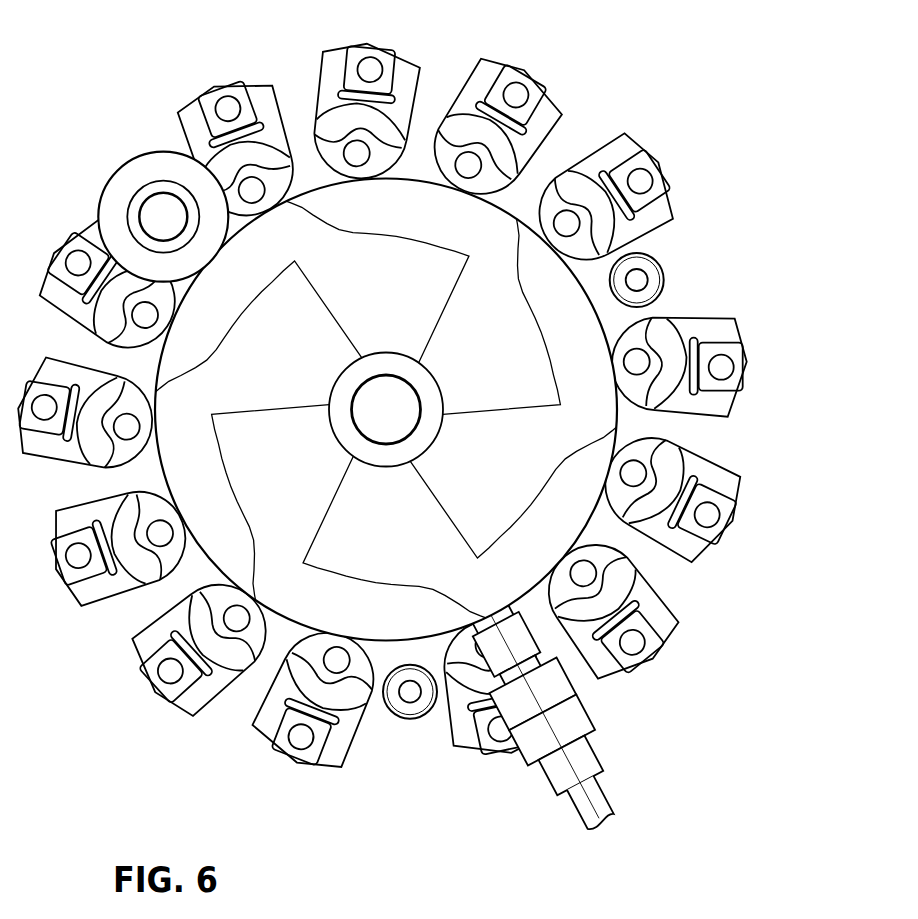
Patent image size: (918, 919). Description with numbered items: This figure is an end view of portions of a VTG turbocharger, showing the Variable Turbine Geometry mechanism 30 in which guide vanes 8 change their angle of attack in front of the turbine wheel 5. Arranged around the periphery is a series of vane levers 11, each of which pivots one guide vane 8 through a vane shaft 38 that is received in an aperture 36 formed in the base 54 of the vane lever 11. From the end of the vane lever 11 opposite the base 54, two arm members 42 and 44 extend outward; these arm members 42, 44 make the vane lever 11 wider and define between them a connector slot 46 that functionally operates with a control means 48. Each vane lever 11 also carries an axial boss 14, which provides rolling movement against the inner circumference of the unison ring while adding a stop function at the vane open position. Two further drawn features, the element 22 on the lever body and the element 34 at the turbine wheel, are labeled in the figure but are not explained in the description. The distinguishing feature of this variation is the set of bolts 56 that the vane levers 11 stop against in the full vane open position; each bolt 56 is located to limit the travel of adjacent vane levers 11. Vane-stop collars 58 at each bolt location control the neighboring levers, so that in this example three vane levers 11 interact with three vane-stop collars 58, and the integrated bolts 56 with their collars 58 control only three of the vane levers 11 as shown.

The turbine wheel 5 is at (498, 220).
The guide vane 8 is at (317, 638).
The vane lever 11 is at (630, 148).
The axial boss 14 is at (678, 335).
The curved slot 22 is at (672, 395).
The Variable Turbine Geometry (VTG) mechanism 30 is at (592, 690).
The rotor disk rim 34 is at (614, 468).
The aperture 36 is at (562, 225).
The vane shaft 38 is at (343, 655).
The arm member 42 is at (697, 553).
The arm member 44 is at (727, 480).
The connector slot 46 is at (747, 352).
The control means 48 is at (658, 182).
The base 54 is at (585, 372).
The bolt 56 is at (653, 285).
The vane-stop collar 58 is at (657, 260).